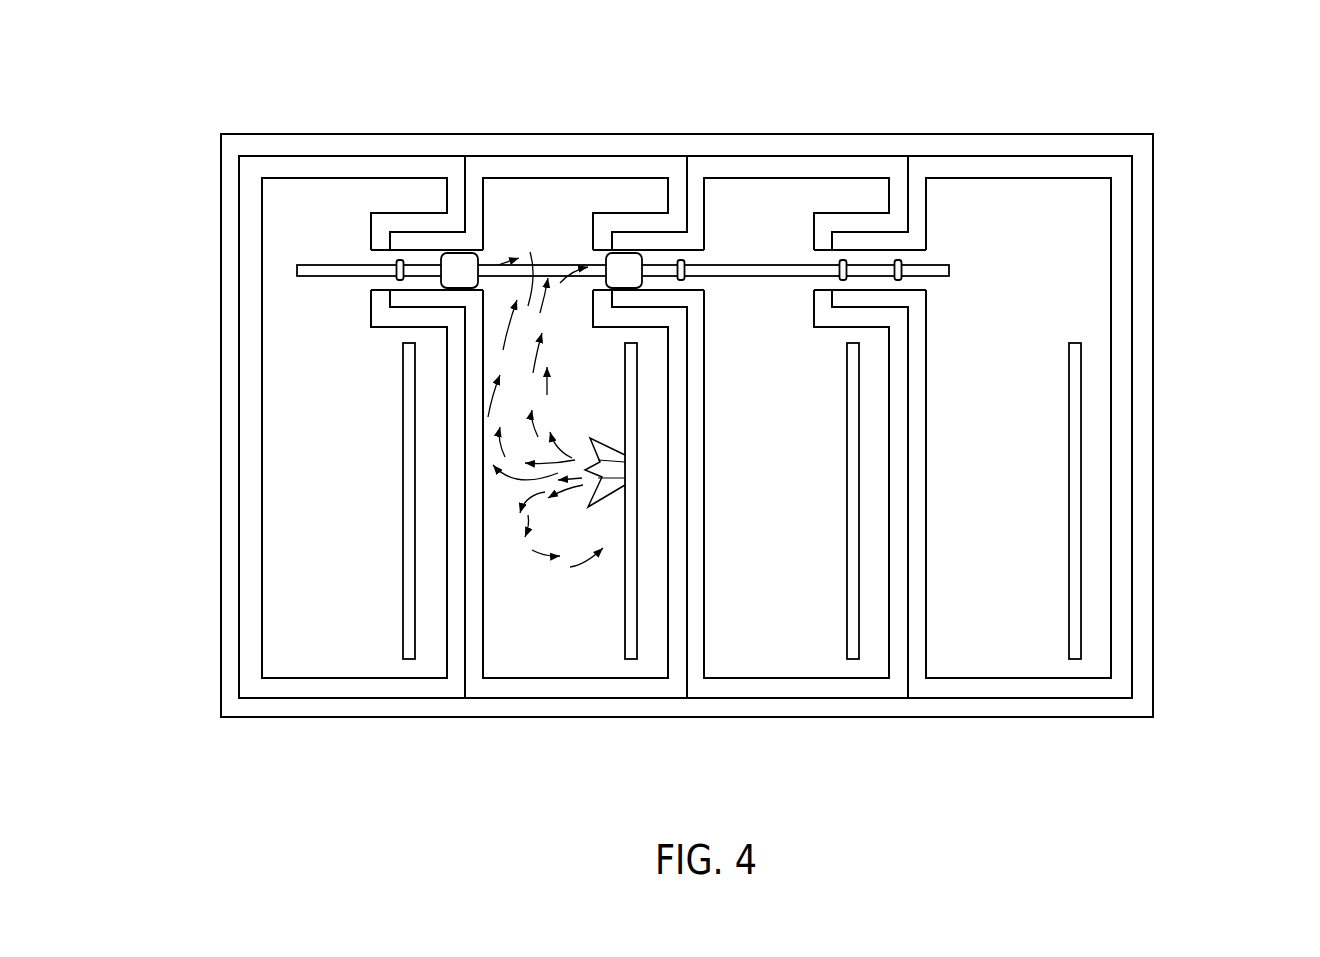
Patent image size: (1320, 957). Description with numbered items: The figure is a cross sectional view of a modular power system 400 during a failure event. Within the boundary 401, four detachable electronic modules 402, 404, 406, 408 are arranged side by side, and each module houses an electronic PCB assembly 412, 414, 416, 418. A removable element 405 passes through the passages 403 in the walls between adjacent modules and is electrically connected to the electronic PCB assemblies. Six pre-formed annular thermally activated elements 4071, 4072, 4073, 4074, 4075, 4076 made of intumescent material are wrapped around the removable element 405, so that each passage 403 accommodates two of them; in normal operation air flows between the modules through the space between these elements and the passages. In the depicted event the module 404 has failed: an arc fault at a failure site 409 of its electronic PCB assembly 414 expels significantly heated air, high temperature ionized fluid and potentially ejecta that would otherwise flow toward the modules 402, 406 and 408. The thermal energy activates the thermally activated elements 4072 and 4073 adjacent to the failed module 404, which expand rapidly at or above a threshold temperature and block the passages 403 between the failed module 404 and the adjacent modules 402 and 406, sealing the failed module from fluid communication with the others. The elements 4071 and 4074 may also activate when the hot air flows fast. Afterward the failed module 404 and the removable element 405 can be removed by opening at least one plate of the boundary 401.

The modular power system 400 is at (1180, 88).
The boundary 401 is at (232, 252).
The module 402 is at (337, 165).
The module 404 is at (577, 165).
The module 406 is at (798, 165).
The module 408 is at (1010, 165).
The passage 403 is at (382, 258).
The removable element 405 is at (932, 265).
The thermally activated element 4071 is at (388, 280).
The thermally activated element 4072 is at (467, 277).
The thermally activated element 4073 is at (617, 278).
The thermally activated element 4074 is at (685, 280).
The thermally activated element 4075 is at (835, 280).
The thermally activated element 4076 is at (905, 278).
The failure site 409 is at (620, 458).
The electronic PCB assembly 412 is at (403, 572).
The electronic PCB assembly 414 is at (625, 572).
The electronic PCB assembly 416 is at (847, 572).
The electronic PCB assembly 418 is at (1069, 572).